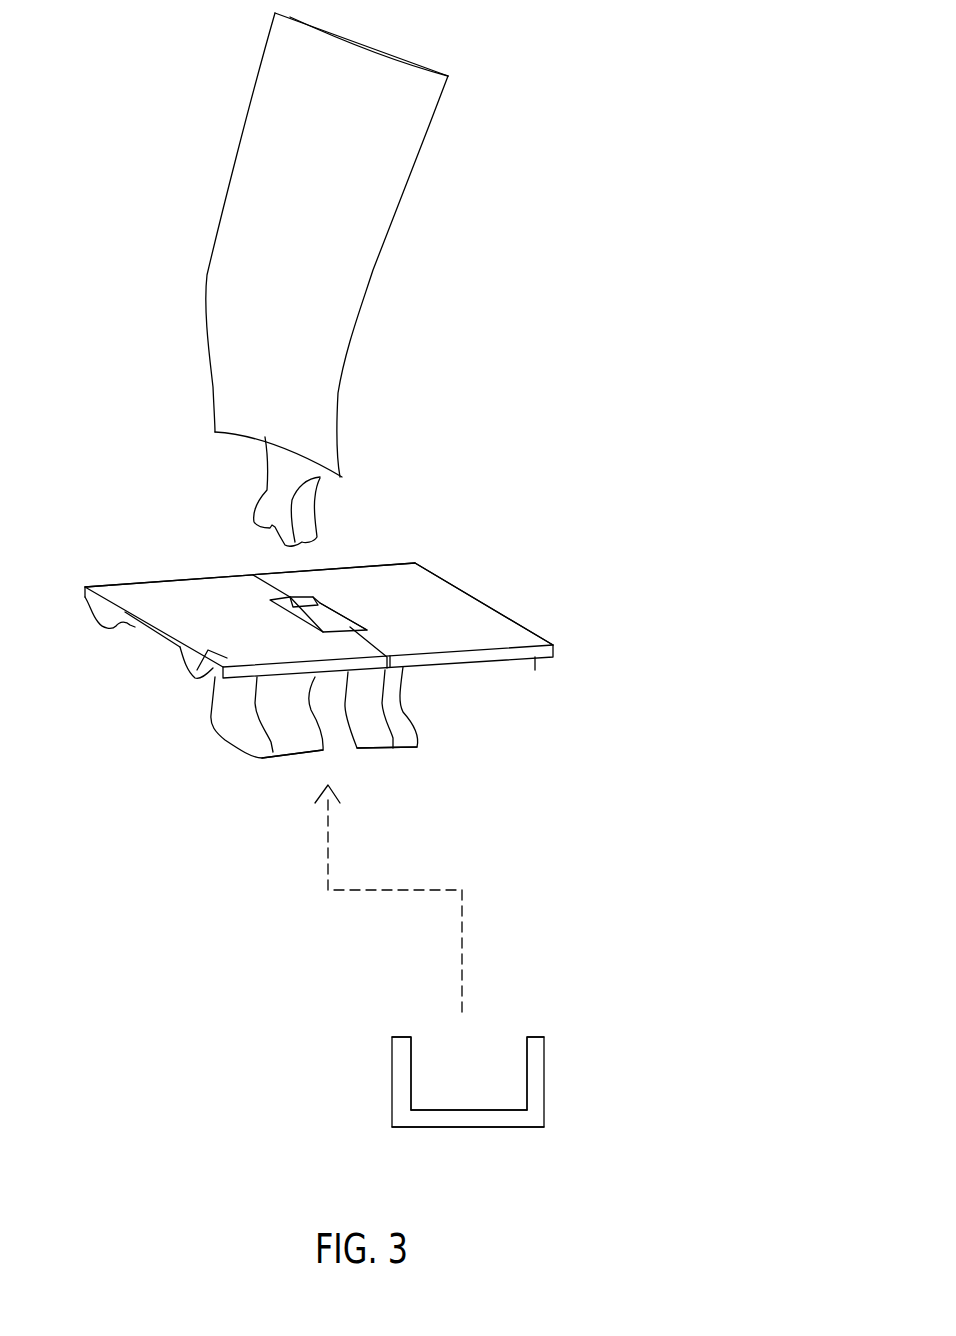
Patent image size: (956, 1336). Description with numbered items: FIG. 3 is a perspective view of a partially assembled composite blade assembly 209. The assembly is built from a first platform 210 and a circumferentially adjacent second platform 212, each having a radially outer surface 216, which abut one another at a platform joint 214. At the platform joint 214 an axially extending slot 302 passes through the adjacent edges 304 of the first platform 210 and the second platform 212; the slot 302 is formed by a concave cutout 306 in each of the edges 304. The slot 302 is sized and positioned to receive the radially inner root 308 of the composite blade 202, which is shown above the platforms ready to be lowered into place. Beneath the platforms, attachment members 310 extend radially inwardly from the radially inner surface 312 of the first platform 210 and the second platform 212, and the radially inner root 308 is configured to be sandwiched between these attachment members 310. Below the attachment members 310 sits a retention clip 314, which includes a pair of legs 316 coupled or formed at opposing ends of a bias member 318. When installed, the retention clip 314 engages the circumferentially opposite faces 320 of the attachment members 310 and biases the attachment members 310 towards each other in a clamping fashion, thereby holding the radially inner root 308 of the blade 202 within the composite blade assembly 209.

The composite blade 202 is at (432, 143).
The composite blade assembly 209 is at (532, 410).
The first platform 210 is at (146, 592).
The second platform 212 is at (396, 562).
The platform joint 214 is at (397, 665).
The radially outer surface 216 is at (503, 630).
The slot 302 is at (320, 622).
The adjacent edges 304 is at (240, 577).
The concave cutout 306 is at (282, 606).
The radially inner root 308 is at (266, 482).
The attachment members 310 is at (290, 760).
The radially inner surface 312 is at (150, 640).
The retention clip 314 is at (544, 1107).
The legs 316 is at (392, 1068).
The bias member 318 is at (443, 1127).
The circumferentially opposite faces 320 is at (238, 728).